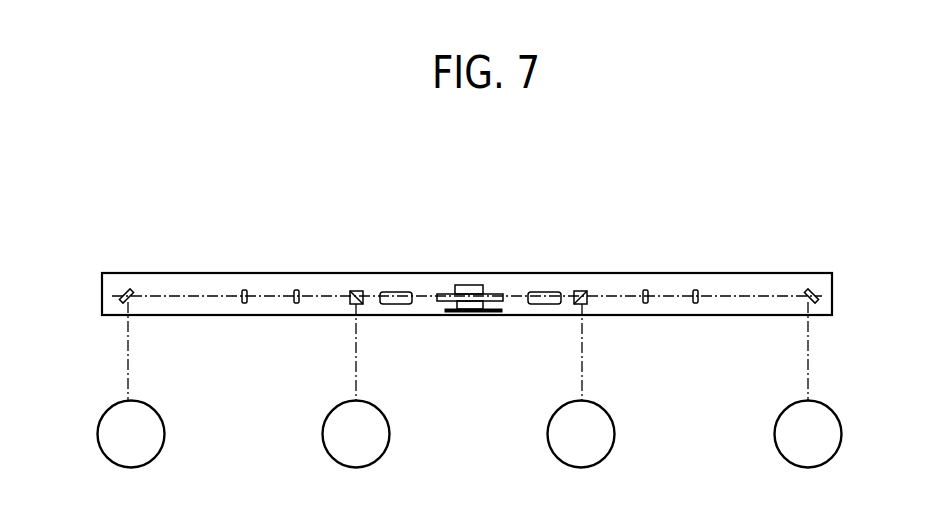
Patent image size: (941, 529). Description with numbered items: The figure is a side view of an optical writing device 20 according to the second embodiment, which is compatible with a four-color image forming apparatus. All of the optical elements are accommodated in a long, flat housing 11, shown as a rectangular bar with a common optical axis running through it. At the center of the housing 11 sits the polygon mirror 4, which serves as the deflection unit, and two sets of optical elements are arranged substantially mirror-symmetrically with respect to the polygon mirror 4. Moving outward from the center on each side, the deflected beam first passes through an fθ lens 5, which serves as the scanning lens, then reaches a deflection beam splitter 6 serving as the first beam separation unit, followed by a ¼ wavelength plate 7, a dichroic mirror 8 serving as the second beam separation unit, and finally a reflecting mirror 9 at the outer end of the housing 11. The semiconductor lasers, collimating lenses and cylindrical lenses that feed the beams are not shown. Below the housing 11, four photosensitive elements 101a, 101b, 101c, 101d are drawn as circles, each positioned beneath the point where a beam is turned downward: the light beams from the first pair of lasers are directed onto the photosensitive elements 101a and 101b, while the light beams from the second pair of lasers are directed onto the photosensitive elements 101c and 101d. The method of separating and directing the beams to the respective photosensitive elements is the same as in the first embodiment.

The polygon mirror 4 is at (448, 287).
The fθ lens 5 is at (398, 292).
The deflection beam splitter 6 is at (357, 291).
The ¼ wavelength plate 7 is at (296, 290).
The dichroic mirror 8 is at (245, 290).
The reflecting mirror 9 is at (128, 288).
The housing 11 is at (208, 315).
The optical writing device 20 is at (503, 238).
The photosensitive element 101a is at (164, 438).
The photosensitive element 101b is at (389, 438).
The photosensitive element 101c is at (614, 438).
The photosensitive element 101d is at (841, 438).